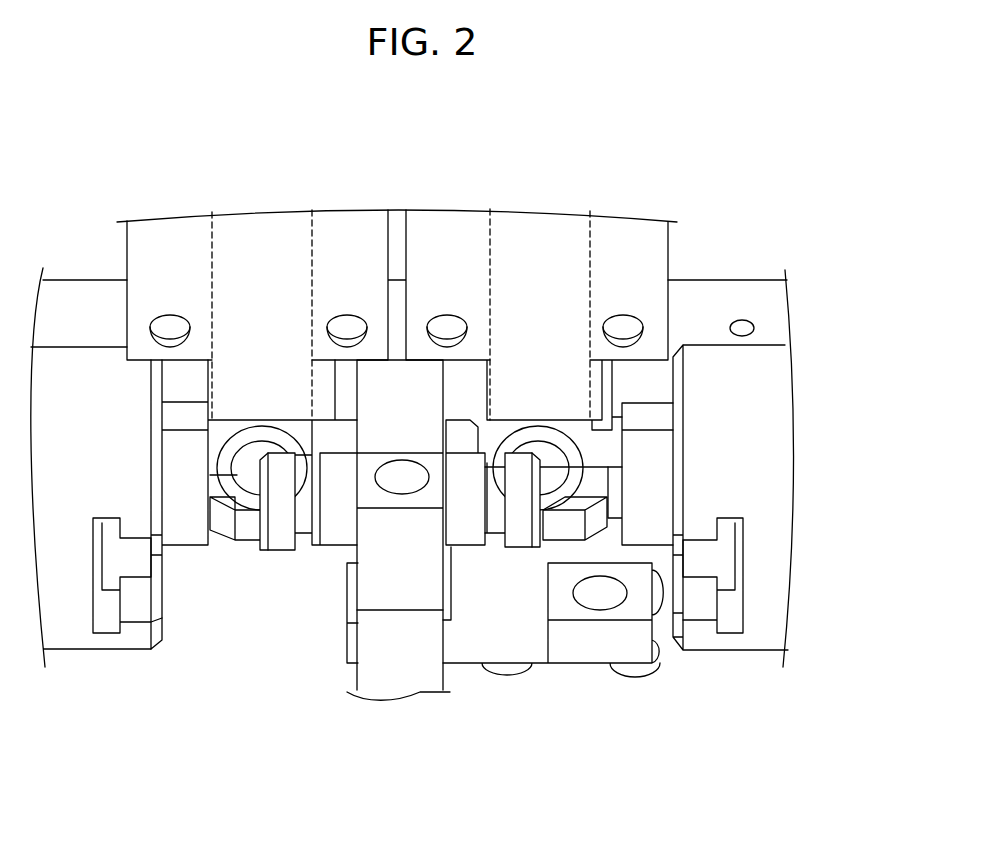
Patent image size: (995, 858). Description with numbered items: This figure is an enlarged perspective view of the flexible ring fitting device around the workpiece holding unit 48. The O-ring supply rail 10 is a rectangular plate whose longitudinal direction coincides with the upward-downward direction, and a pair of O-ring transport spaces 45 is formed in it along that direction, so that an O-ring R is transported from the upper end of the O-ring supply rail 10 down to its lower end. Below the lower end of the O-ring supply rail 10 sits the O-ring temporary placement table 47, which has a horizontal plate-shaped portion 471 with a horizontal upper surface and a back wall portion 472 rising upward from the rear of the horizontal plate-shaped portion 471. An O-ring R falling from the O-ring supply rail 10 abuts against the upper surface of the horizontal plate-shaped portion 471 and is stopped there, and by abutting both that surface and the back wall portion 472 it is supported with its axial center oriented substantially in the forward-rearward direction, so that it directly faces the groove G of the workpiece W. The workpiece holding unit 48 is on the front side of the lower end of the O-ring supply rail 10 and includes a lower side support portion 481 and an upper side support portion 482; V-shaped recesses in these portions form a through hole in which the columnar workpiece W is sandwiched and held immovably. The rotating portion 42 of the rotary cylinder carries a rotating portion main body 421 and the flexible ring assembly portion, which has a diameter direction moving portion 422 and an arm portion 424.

The O-ring supply rail 10 is at (712, 213).
The rotating portion 42 is at (692, 328).
The rotating portion main body 421 is at (762, 408).
The diameter direction moving portion 422 is at (703, 529).
The arm portion 424 is at (578, 440).
The O-ring transport space 45 is at (262, 247).
The O-ring temporary placement table 47 is at (567, 550).
The horizontal plate-shaped portion 471 is at (597, 523).
The back wall portion 472 is at (610, 487).
The workpiece holding unit 48 is at (363, 700).
The lower side support portion 481 is at (398, 673).
The upper side support portion 482 is at (370, 568).
The O-ring R is at (250, 427).
The workpiece W is at (465, 528).
The groove G is at (495, 527).